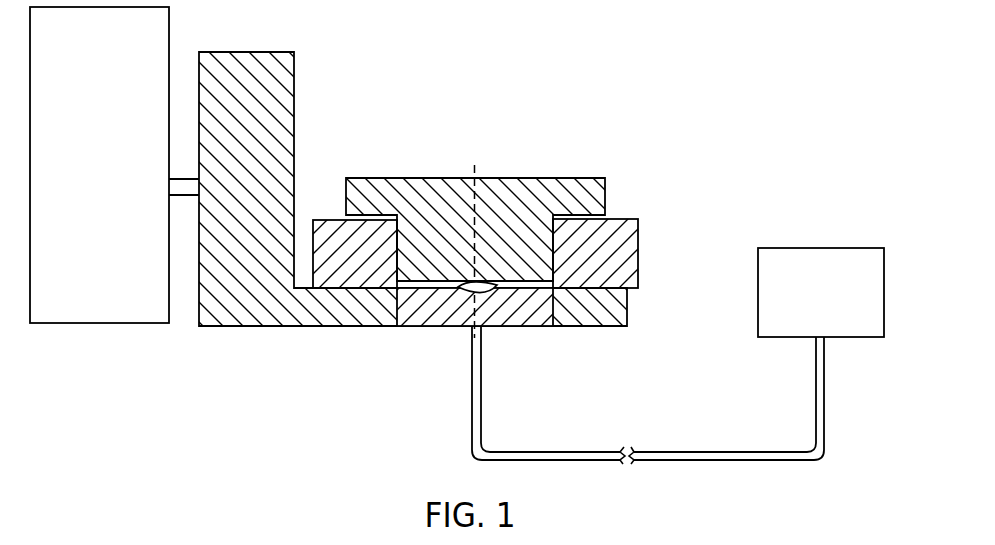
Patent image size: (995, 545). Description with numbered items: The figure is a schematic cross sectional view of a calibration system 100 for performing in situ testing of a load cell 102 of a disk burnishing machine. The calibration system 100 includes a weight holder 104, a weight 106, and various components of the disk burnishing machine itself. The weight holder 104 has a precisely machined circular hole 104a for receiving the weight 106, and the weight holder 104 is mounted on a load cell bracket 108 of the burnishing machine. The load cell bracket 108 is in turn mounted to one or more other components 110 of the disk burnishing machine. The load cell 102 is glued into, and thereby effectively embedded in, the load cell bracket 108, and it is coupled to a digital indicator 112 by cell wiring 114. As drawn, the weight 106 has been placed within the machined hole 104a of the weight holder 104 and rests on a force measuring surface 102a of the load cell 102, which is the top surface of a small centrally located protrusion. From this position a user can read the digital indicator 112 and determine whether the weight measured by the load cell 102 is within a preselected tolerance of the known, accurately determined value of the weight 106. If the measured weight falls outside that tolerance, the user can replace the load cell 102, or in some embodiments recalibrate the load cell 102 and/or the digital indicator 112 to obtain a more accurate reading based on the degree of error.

The calibration system 100 is at (648, 75).
The load cell 102 is at (411, 335).
The force measuring surface 102a is at (497, 286).
The weight holder 104 is at (619, 230).
The circular hole 104a is at (403, 238).
The weight 106 is at (462, 182).
The load cell bracket 108 is at (220, 310).
The other components 110 is at (76, 250).
The digital indicator 112 is at (820, 248).
The cell wiring 114 is at (627, 450).